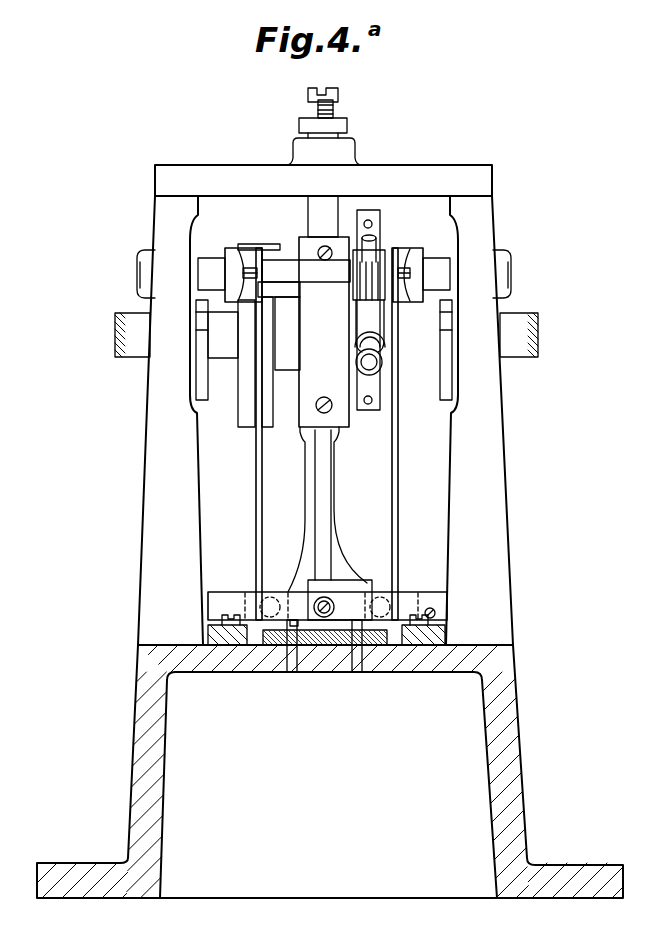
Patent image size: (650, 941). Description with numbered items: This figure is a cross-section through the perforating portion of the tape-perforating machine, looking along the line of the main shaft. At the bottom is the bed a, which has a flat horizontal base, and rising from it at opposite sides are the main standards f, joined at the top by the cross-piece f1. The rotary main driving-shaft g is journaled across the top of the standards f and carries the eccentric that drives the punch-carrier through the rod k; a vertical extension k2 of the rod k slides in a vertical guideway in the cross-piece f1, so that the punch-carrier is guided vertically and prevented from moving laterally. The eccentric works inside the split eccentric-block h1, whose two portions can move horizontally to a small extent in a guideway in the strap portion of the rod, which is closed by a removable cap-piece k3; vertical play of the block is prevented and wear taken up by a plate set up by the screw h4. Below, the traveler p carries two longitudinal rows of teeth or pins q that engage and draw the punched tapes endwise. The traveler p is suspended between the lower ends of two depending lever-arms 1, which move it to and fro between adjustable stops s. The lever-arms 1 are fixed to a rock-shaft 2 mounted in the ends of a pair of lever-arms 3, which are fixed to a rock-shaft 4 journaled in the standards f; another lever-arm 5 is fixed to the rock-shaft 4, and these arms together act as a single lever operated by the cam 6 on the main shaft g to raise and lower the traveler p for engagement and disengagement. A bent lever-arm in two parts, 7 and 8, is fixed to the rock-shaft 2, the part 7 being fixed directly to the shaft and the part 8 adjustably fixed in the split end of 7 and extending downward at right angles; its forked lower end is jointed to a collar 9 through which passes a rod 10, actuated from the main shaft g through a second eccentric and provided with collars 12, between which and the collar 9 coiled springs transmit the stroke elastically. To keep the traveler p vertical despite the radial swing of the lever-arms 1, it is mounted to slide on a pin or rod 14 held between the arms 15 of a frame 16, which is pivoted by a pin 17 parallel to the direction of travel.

The bed a is at (336, 672).
The main standards f is at (325, 420).
The cross-piece f1 is at (323, 167).
The screw h4 is at (338, 113).
The vertical extension k2 is at (323, 216).
The removable cap-piece k3 is at (324, 332).
The rock-shaft 2 is at (311, 283).
The lever-arm 5 is at (280, 250).
The lever-arms 3 is at (228, 262).
The rock-shaft 4 is at (324, 274).
The split eccentric-block h1 is at (300, 364).
The cam 6 is at (245, 380).
The lever-arms 1 is at (256, 482).
The collars 12 is at (378, 378).
The bent lever-arm part 7 is at (390, 258).
The bent lever-arm part 8 is at (367, 250).
The collar 9 is at (380, 337).
The rod 10 is at (372, 362).
The rod k is at (322, 520).
The traveler p is at (314, 606).
The pin or rod 14 is at (328, 598).
The arms 15 is at (283, 600).
The adjustable stops s is at (257, 590).
The frame 16 is at (425, 592).
The pin 17 is at (437, 612).
The teeth or pins q is at (262, 632).
The main driving-shaft g is at (326, 335).